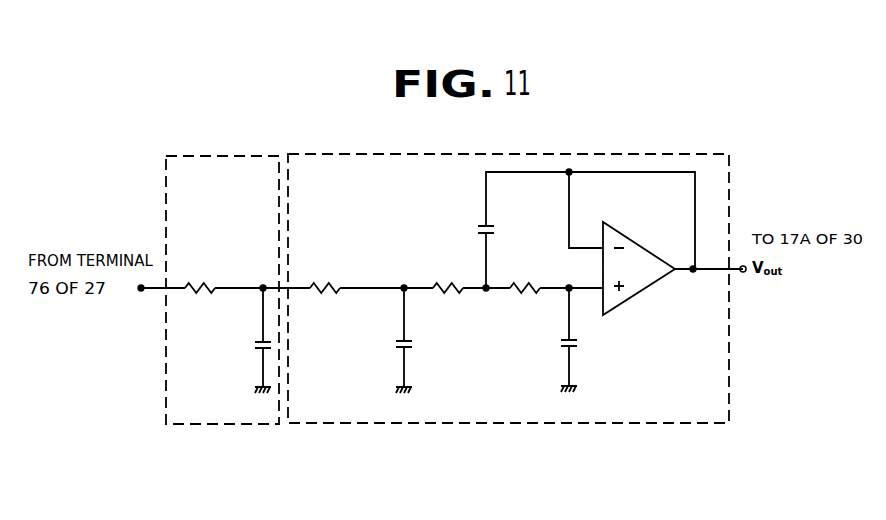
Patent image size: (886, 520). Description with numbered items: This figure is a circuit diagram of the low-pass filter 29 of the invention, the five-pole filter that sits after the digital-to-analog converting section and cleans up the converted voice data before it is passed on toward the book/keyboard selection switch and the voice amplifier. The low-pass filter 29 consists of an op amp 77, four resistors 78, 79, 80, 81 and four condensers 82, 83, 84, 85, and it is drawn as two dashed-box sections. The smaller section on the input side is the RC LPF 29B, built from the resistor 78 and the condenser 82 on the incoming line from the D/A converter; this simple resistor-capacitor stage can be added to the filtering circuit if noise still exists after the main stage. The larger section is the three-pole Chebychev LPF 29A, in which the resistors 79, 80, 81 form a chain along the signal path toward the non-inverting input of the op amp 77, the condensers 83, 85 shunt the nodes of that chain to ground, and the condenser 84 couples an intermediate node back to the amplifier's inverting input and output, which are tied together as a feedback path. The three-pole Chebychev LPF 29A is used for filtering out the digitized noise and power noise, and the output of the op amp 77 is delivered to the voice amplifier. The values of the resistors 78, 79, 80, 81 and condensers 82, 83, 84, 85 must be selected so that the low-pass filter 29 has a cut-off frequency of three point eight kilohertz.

The low-pass filter 29 is at (596, 125).
The 3-Pole Chebychev LPF 29A is at (716, 153).
The RC LPF 29B is at (236, 157).
The op amp 77 is at (640, 296).
The resistor 78 is at (198, 284).
The resistor 79 is at (329, 284).
The resistor 80 is at (462, 292).
The resistor 81 is at (529, 292).
The condenser 82 is at (256, 346).
The condenser 83 is at (393, 343).
The condenser 84 is at (492, 226).
The condenser 85 is at (567, 344).